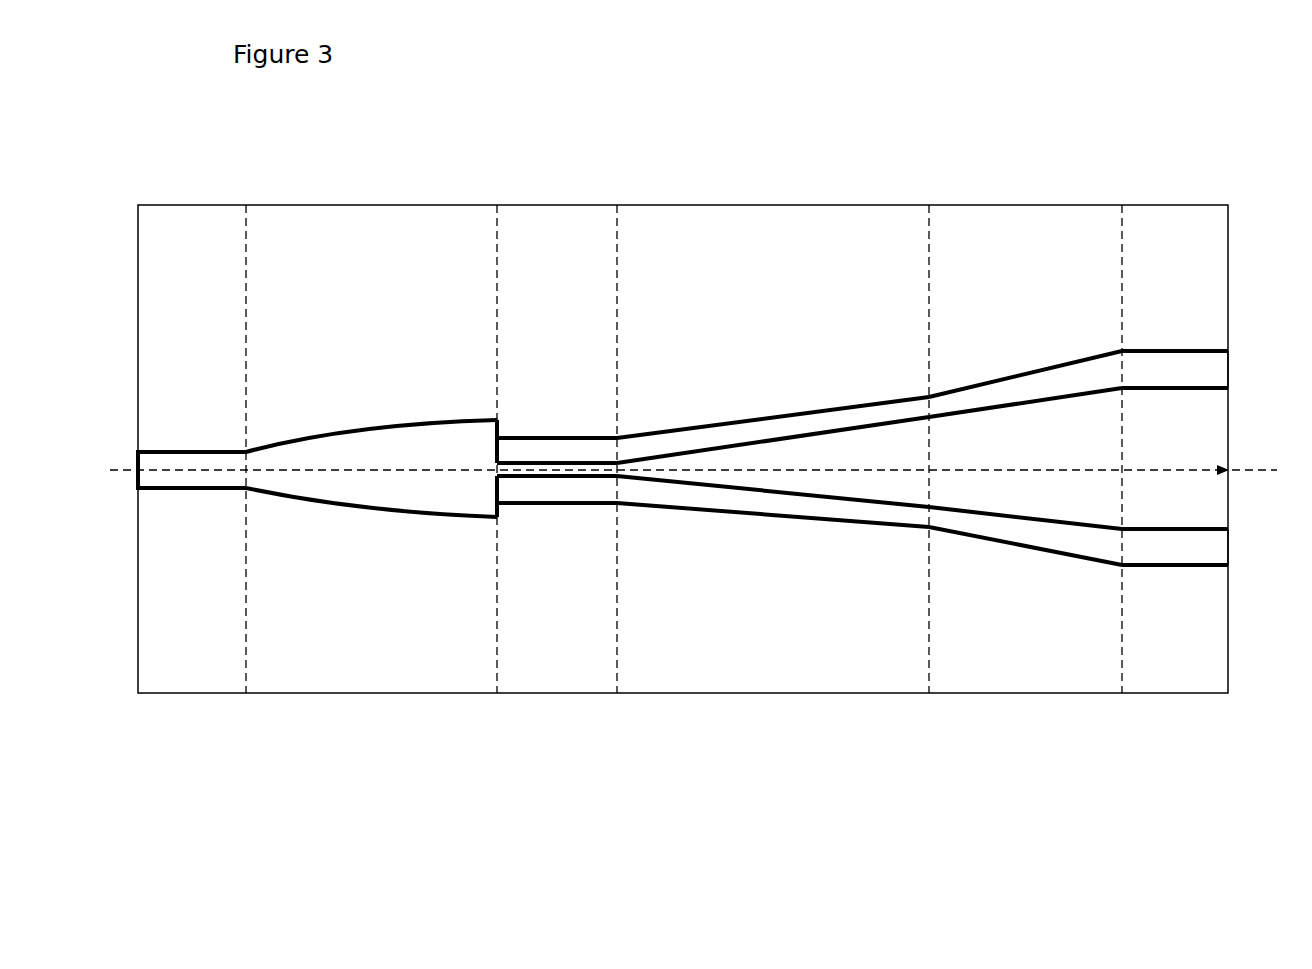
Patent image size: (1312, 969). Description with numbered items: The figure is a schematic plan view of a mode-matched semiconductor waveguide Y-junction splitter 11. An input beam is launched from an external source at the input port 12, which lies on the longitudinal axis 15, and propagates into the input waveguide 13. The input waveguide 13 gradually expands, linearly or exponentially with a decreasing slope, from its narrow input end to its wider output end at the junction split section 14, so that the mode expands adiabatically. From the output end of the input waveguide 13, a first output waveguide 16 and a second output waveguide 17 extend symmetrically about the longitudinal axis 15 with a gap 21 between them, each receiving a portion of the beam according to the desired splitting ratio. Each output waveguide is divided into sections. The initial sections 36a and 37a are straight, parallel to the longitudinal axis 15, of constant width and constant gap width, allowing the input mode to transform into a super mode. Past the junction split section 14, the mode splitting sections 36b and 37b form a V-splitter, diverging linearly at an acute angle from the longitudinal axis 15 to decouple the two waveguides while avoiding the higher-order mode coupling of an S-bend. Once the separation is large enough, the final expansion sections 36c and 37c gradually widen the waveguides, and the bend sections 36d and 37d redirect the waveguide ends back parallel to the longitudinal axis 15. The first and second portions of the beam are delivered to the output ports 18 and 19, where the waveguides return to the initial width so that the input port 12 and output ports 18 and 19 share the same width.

The Y-junction splitter 11 is at (176, 232).
The input port 12 is at (192, 490).
The input waveguide 13 is at (380, 448).
The junction split section 14 is at (486, 479).
The longitudinal axis 15 is at (1258, 470).
The first output waveguide 16 is at (872, 292).
The second output waveguide 17 is at (867, 645).
The first output port 18 is at (1230, 365).
The second output port 19 is at (1232, 547).
The gap 21 is at (547, 468).
The initial section 36a is at (570, 447).
The mode splitting section 36b is at (815, 418).
The final expansion section 36c is at (1043, 382).
The bend section 36d is at (1175, 365).
The initial section 37a is at (575, 493).
The mode splitting section 37b is at (795, 507).
The final expansion section 37c is at (1032, 543).
The bend section 37d is at (1185, 552).